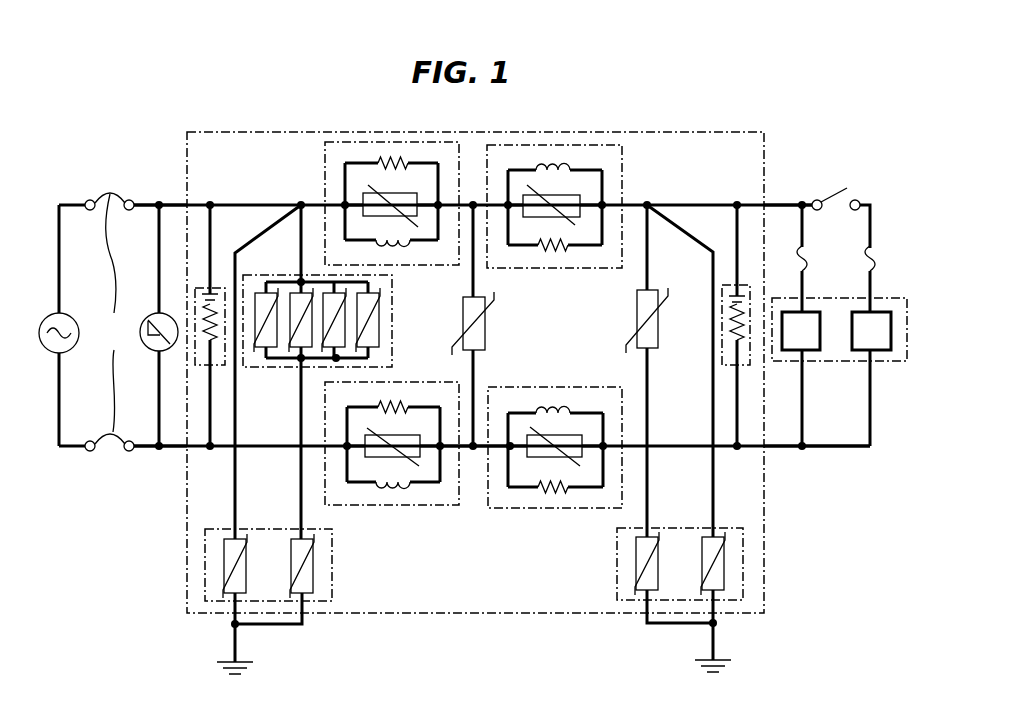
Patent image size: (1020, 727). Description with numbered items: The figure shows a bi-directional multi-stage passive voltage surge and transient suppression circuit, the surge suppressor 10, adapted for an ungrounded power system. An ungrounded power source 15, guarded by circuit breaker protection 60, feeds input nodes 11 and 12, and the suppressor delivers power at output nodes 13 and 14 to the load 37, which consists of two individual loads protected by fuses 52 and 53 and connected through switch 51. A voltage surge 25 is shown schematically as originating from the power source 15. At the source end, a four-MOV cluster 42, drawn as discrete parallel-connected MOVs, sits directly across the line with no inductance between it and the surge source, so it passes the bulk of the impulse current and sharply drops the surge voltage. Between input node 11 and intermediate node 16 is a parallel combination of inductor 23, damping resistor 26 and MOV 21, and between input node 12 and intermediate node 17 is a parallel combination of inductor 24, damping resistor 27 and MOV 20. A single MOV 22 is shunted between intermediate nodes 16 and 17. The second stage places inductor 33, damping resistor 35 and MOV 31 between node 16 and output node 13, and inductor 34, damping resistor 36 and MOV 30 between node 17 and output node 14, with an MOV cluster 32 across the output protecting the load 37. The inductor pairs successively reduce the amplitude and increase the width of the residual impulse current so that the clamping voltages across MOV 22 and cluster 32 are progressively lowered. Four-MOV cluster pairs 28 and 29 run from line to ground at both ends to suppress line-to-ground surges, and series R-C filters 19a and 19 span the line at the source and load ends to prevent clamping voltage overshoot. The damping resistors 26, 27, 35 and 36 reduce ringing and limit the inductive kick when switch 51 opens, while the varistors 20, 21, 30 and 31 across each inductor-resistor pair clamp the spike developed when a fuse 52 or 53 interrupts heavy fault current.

The surge suppressor 10 is at (430, 613).
The input node 11 is at (157, 202).
The input node 12 is at (157, 450).
The output node 13 is at (802, 200).
The output node 14 is at (802, 450).
The power source 15 is at (67, 315).
The intermediate node 16 is at (473, 200).
The intermediate node 17 is at (473, 455).
The series R-C filter 19 is at (732, 284).
The series R-C filter 19a is at (212, 286).
The MOV 20 is at (390, 435).
The MOV 21 is at (366, 195).
The MOV 22 is at (484, 369).
The inductor 23 is at (400, 163).
The inductor 24 is at (380, 486).
The voltage surge 25 is at (156, 352).
The damping resistor 26 is at (402, 243).
The damping resistor 27 is at (408, 403).
The four-MOV cluster pair 28 is at (333, 565).
The four-MOV cluster pair 29 is at (744, 567).
The MOV 30 is at (603, 433).
The MOV 31 is at (580, 203).
The MOV cluster 32 is at (661, 369).
The inductor 33 is at (572, 168).
The inductor 34 is at (545, 488).
The damping resistor 35 is at (565, 247).
The damping resistor 36 is at (570, 411).
The load 37 is at (907, 362).
The MOV cluster 42 is at (395, 306).
The switch 51 is at (843, 190).
The fuse 52 is at (812, 257).
The fuse 53 is at (879, 257).
The circuit breaker protection 60 is at (111, 313).